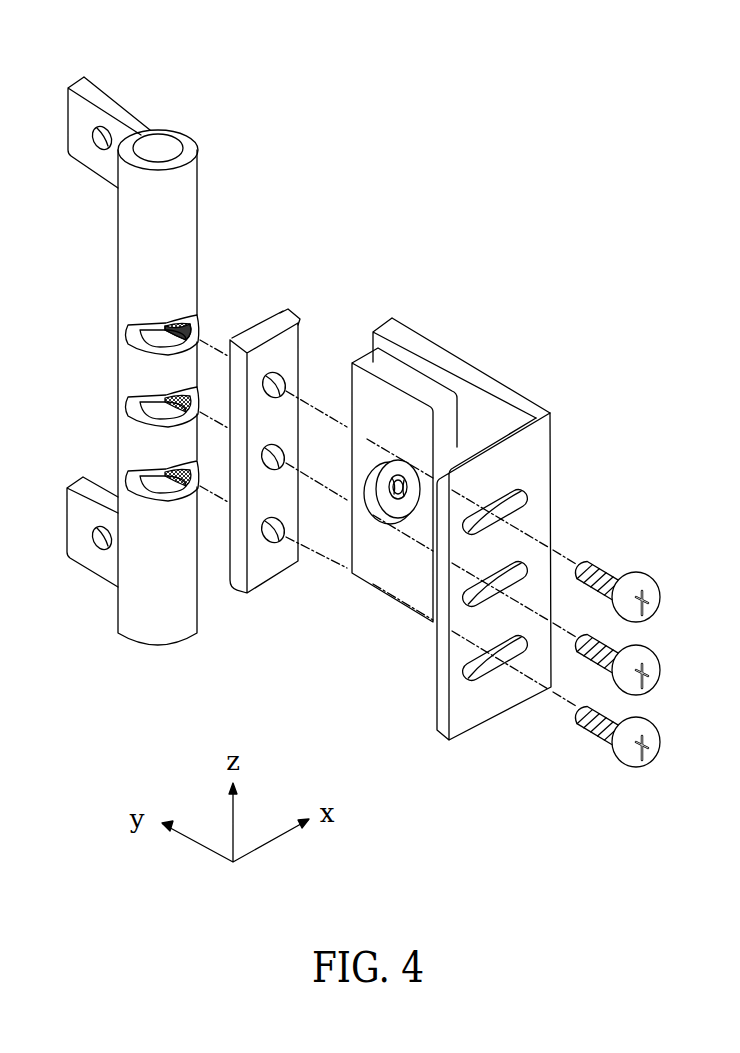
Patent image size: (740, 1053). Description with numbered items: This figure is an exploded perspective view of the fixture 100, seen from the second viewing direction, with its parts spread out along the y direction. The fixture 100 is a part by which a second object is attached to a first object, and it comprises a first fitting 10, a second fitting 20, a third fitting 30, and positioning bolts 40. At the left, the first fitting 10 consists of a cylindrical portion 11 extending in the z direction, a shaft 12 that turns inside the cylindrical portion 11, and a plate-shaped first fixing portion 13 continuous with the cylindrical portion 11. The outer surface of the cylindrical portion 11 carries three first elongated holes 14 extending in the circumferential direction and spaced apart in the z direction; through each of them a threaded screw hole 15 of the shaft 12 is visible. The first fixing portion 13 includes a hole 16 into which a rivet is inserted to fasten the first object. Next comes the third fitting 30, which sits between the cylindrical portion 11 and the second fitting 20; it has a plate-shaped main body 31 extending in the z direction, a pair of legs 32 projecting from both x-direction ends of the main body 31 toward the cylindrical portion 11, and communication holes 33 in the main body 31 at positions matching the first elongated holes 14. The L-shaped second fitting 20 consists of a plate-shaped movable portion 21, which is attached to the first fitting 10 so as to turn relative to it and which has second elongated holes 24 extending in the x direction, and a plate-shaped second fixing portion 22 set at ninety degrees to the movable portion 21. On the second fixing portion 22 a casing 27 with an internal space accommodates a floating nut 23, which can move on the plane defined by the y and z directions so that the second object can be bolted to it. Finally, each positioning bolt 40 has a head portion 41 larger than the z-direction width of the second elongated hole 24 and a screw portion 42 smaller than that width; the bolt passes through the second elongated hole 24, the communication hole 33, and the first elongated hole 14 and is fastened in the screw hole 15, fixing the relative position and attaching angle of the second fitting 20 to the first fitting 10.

The fixture 100 is at (416, 145).
The first fitting 10 is at (144, 331).
The cylindrical portion 11 is at (173, 226).
The shaft 12 is at (160, 146).
The first fixing portion 13 is at (97, 166).
The first elongated hole 14 is at (138, 343).
The screw hole 15 is at (166, 328).
The hole 16 is at (93, 145).
The second fitting 20 is at (455, 510).
The movable portion 21 is at (553, 445).
The second fixing portion 22 is at (410, 340).
The floating nut 23 is at (394, 498).
The second elongated hole 24 is at (522, 498).
The casing 27 is at (366, 472).
The third fitting 30 is at (278, 430).
The main body 31 is at (290, 350).
The leg 32 is at (236, 336).
The communication hole 33 is at (285, 387).
The positioning bolt 40 is at (633, 639).
The head portion 41 is at (653, 583).
The screw portion 42 is at (590, 560).